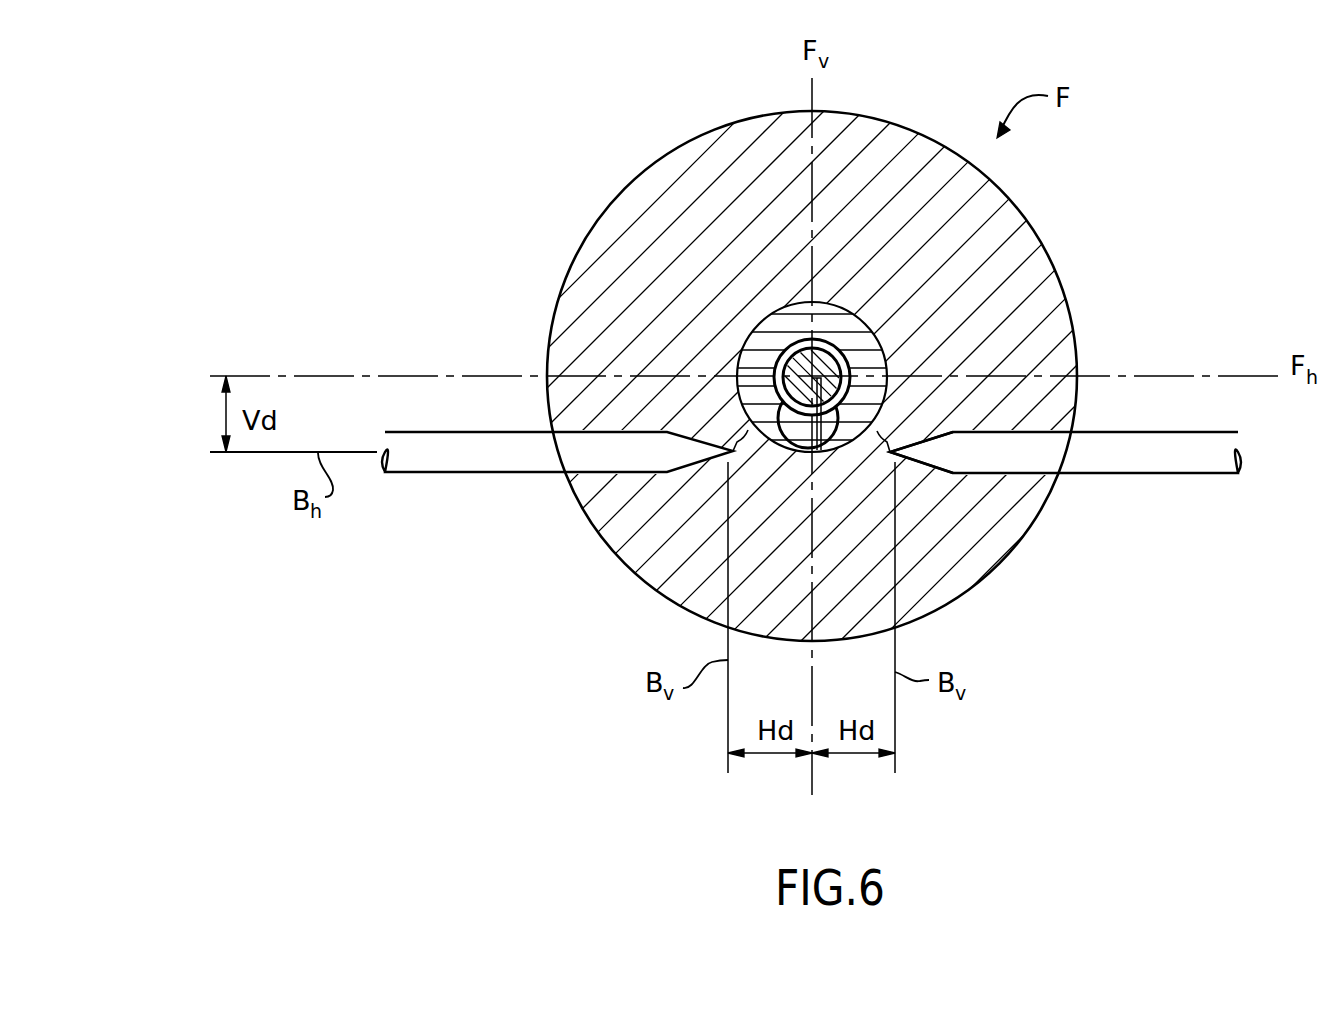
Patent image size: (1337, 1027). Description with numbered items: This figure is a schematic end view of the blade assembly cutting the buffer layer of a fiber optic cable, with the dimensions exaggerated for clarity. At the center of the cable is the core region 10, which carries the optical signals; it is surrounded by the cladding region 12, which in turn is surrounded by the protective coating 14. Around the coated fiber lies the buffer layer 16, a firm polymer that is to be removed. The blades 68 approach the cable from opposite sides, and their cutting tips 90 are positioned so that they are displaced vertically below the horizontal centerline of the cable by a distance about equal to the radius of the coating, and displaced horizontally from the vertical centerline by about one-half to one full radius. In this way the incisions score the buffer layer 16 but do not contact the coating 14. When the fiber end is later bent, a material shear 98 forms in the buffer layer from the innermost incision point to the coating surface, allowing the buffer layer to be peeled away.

The core region 10 is at (782, 457).
The cladding region 12 is at (785, 350).
The protective coating 14 is at (866, 323).
The buffer layer 16 is at (848, 112).
The blades 68 is at (1133, 475).
The cutting tips 90 is at (887, 441).
The material shear 98 is at (746, 432).